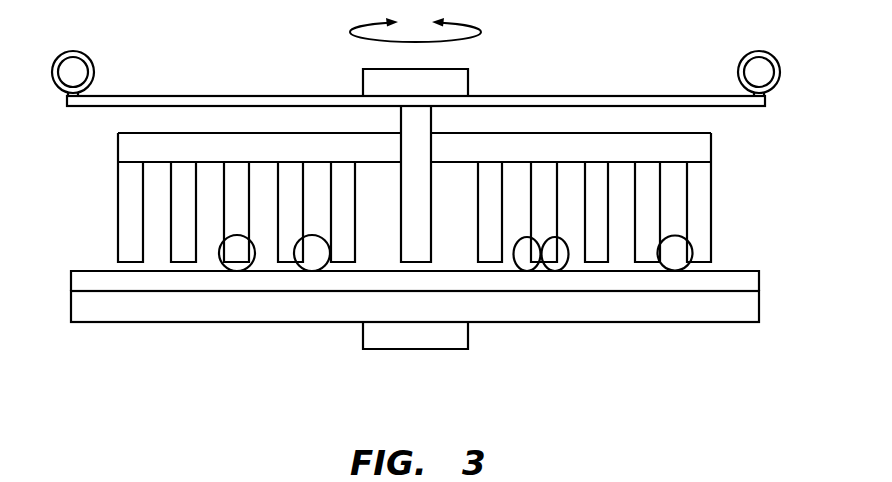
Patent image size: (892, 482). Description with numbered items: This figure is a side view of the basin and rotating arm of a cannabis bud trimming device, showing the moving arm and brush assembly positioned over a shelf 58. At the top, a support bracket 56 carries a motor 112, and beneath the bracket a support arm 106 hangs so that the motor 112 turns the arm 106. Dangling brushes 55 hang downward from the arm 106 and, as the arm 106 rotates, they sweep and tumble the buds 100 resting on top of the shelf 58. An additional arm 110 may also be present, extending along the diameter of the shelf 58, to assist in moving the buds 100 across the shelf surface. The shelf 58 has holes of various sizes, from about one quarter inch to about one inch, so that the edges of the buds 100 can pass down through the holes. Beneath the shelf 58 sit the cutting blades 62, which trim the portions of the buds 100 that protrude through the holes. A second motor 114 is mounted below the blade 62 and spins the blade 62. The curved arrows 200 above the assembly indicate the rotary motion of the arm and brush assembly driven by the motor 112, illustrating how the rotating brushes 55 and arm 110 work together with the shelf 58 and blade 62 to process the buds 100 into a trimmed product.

The rotation direction 200 is at (348, 31).
The support bracket 56 is at (606, 100).
The motor 112 is at (395, 82).
The additional arm 110 is at (413, 252).
The support arm 106 is at (423, 192).
The brushes 55 is at (130, 220).
The buds 100 is at (239, 257).
The shelf 58 is at (742, 282).
The cutting blades 62 is at (747, 303).
The motor 114 is at (402, 338).